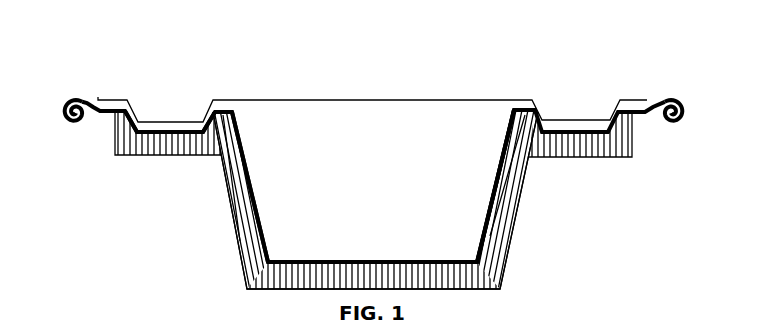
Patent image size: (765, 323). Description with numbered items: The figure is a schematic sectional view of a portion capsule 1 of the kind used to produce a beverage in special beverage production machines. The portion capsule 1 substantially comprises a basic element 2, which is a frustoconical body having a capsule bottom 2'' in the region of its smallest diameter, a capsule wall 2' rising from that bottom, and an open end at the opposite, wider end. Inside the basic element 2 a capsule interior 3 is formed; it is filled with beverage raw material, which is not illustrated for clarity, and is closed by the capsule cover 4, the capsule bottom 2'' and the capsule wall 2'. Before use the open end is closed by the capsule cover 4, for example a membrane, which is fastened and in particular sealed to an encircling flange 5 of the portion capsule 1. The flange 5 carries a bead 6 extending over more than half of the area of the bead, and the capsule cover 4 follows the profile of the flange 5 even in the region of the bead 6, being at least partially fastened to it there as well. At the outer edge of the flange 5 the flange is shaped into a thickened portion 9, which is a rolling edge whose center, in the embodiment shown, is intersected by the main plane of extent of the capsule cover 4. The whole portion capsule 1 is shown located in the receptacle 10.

The portion capsule 1 is at (533, 77).
The basic element 2 is at (374, 196).
The capsule wall 2' is at (373, 186).
The capsule bottom 2'' is at (372, 230).
The capsule interior 3 is at (502, 132).
The capsule cover 4 is at (252, 100).
The flange 5 is at (238, 104).
The bead 6 is at (172, 119).
The thickened portion 9 is at (102, 138).
The receptacle 10 is at (240, 241).